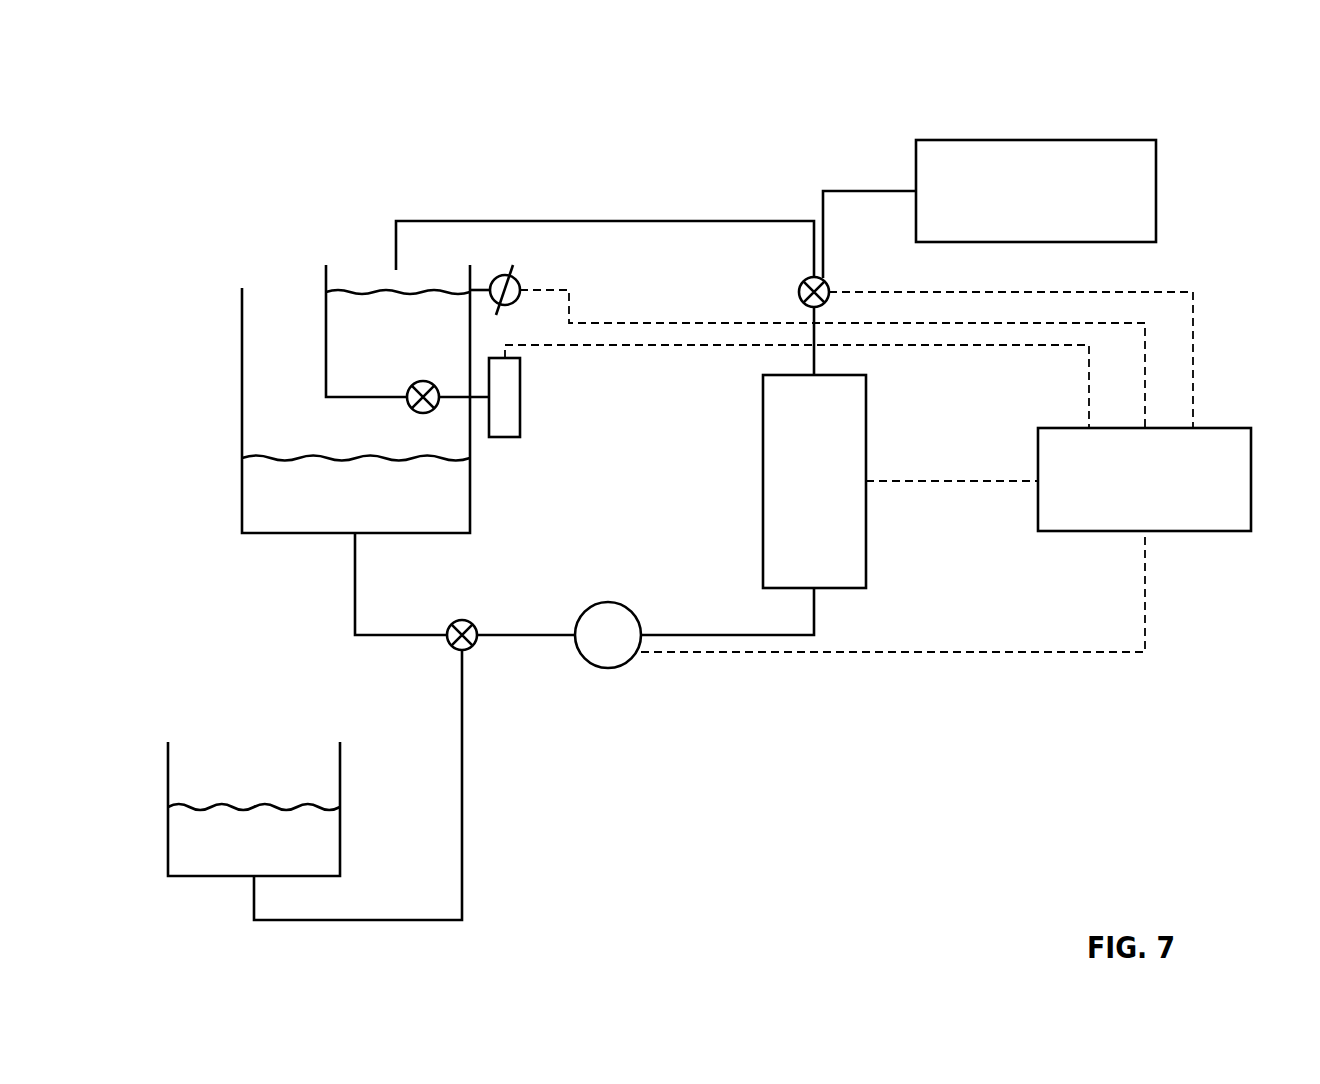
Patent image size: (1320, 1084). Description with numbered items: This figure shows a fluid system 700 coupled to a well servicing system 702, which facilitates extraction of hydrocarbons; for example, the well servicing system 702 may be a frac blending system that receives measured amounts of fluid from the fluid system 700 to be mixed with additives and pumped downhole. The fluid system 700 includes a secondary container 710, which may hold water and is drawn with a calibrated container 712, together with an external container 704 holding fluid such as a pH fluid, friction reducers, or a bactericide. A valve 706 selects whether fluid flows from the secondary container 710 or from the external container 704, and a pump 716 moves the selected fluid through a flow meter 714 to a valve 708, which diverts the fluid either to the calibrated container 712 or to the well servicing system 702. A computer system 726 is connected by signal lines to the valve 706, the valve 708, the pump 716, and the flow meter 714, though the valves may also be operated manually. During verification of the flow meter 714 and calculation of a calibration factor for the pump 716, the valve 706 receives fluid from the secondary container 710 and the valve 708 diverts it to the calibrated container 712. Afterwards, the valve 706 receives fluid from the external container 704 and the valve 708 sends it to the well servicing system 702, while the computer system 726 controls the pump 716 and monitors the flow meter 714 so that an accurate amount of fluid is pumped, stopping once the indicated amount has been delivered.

The fluid system 700 is at (468, 76).
The well servicing system 702 is at (1080, 242).
The external container 704 is at (340, 838).
The valve 706 is at (462, 621).
The valve 708 is at (799, 291).
The secondary container 710 is at (242, 497).
The calibrated container 712 is at (353, 399).
The flow meter 714 is at (761, 482).
The pump 716 is at (610, 669).
The computer system 726 is at (1180, 531).